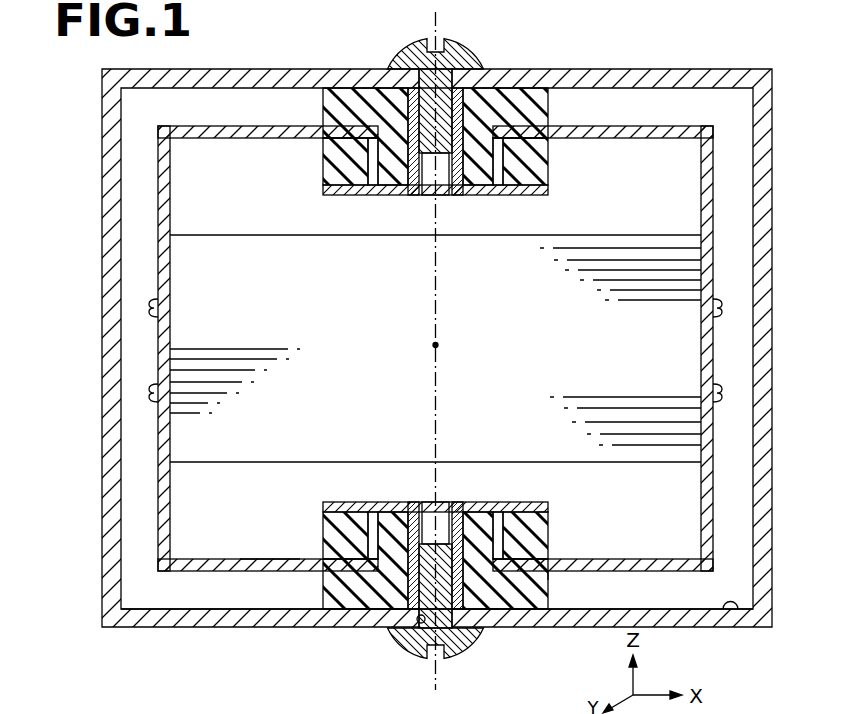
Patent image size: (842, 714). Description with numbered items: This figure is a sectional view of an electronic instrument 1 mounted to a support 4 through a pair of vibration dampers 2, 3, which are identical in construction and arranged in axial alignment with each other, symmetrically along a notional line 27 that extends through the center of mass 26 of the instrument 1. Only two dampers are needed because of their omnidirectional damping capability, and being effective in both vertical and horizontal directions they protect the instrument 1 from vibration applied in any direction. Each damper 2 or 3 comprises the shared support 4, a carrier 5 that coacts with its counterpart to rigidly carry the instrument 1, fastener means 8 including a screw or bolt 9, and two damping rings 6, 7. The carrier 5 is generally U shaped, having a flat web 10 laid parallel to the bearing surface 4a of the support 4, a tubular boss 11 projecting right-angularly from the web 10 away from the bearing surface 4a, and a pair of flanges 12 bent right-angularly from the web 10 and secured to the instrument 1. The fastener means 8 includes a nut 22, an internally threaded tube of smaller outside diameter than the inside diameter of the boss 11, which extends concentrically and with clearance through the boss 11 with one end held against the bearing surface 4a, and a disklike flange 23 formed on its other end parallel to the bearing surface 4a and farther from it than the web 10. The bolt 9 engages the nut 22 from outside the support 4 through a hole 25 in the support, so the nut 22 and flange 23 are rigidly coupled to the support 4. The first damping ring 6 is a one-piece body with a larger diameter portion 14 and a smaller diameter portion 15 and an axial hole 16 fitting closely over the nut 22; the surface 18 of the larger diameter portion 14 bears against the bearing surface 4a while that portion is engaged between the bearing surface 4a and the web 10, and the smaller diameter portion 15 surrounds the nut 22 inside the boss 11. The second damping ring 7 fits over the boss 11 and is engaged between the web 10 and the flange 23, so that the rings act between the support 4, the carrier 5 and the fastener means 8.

The electronic instrument 1 is at (585, 231).
The vibration damper 2 is at (294, 545).
The vibration damper 3 is at (575, 103).
The support 4 is at (700, 628).
The bearing surface 4a is at (739, 608).
The carrier 5 is at (207, 146).
The first damping ring 6 is at (318, 107).
The second damping ring 7 is at (323, 164).
The fastener means 8 is at (549, 196).
The screw or bolt 9 is at (470, 62).
The web 10 is at (210, 559).
The tubular boss 11 is at (385, 532).
The flange 12 is at (160, 440).
The larger diameter portion 14 is at (548, 572).
The smaller diameter portion 15 is at (495, 503).
The hole 16 is at (321, 611).
The surface 18 is at (520, 611).
The nut 22 is at (388, 611).
The flange 23 is at (328, 503).
The hole 25 is at (418, 631).
The center of mass 26 is at (440, 345).
The notional line 27 is at (432, 24).